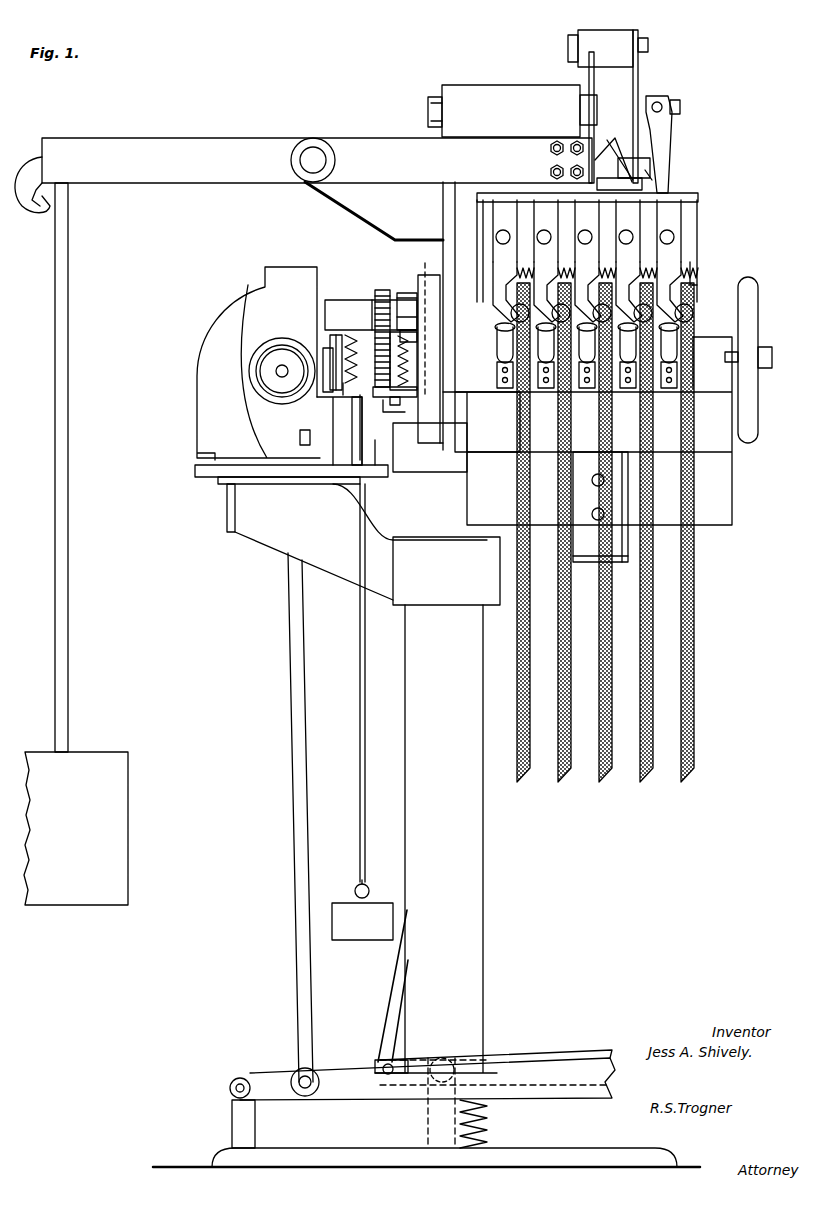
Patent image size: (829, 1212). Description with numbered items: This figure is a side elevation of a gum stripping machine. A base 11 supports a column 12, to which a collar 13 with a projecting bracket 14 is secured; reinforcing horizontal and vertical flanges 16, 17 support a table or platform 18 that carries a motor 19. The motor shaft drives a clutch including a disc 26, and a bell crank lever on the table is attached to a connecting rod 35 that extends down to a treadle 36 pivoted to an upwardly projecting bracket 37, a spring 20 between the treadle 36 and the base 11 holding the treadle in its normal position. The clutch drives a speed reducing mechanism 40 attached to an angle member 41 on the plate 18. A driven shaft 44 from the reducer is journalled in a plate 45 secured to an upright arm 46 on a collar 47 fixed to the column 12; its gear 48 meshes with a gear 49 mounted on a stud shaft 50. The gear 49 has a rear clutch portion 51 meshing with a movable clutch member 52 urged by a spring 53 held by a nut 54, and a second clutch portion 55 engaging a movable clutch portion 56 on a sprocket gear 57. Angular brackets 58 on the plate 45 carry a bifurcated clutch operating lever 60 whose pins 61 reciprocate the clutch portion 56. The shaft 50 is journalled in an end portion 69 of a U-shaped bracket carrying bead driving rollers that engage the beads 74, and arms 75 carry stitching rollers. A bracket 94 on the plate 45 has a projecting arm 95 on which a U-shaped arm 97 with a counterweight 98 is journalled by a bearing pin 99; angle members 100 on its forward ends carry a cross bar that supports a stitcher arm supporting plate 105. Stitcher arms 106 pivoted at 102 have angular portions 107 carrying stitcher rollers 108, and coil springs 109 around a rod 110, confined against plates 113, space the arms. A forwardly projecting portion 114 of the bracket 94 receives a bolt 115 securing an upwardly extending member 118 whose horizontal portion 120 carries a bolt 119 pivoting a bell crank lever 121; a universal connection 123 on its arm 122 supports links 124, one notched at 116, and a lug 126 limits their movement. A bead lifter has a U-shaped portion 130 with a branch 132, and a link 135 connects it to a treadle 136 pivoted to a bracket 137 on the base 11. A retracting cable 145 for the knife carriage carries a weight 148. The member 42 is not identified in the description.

The base 11 is at (605, 1148).
The column 12 is at (483, 800).
The collar 13 is at (487, 605).
The projecting bracket 14 is at (275, 549).
The horizontal flange 16 is at (330, 488).
The vertical flange 17 is at (227, 512).
The table or platform 18 is at (195, 472).
The motor 19 is at (200, 335).
The spring 20 is at (487, 1124).
The clutch disc 26 is at (505, 345).
The connecting rod 35 is at (298, 797).
The treadle 36 is at (548, 1098).
The upwardly projecting bracket 37 is at (232, 1120).
The speed reducing mechanism 40 is at (250, 380).
The angle member 41 is at (362, 465).
The bracket 42 is at (403, 468).
The driven shaft 44 is at (341, 333).
The plate 45 is at (417, 363).
The upright arm 46 is at (440, 432).
The collar 47 is at (430, 472).
The gear 48 is at (379, 328).
The gear 49 is at (370, 395).
The stud shaft 50 is at (730, 352).
The rear clutch portion 51 is at (368, 300).
The movable clutch member 52 is at (350, 335).
The spring 53 is at (328, 348).
The nut 54 is at (343, 395).
The second clutch portion 55 is at (399, 304).
The movable clutch portion 56 is at (407, 311).
The sprocket gear 57 is at (417, 357).
The angular brackets 58 is at (418, 290).
The bifurcated clutch operating lever 60 is at (392, 412).
The pins 61 is at (420, 322).
The end portion of bracket 69 is at (470, 392).
The beads 74 is at (686, 775).
The arms 75 is at (678, 378).
The upwardly extending bracket 94 is at (442, 230).
The projecting arm 95 is at (360, 205).
The arm of U-shape 97 is at (50, 150).
The counterweight 98 is at (95, 770).
The bearing pin 99 is at (308, 170).
The angle members 100 is at (548, 180).
The pivot 102 is at (545, 237).
The stitcher arm supporting plate 105 is at (690, 197).
The stitcher arms 106 is at (500, 240).
The angularly disposed portions 107 is at (498, 305).
The stitcher rollers 108 is at (511, 315).
The coil springs 109 is at (692, 262).
The rod 110 is at (500, 262).
The plates 113 is at (540, 275).
The forwardly projecting portion 114 is at (478, 85).
The bolt 115 is at (428, 104).
The notch 116 is at (640, 178).
The upwardly extending member 118 is at (589, 70).
The bolt 119 is at (648, 46).
The horizontal portion 120 is at (578, 35).
The bell crank lever 121 is at (638, 78).
The arm 122 is at (630, 145).
The universal connection 123 is at (668, 100).
The links 124 is at (650, 128).
The lug 126 is at (660, 163).
The portion of U-shape 130 is at (620, 562).
The branch 132 is at (582, 462).
The link 135 is at (392, 990).
The treadle 136 is at (590, 1056).
The bracket 137 is at (425, 1113).
The retracting cable 145 is at (360, 690).
The weight 148 is at (340, 903).